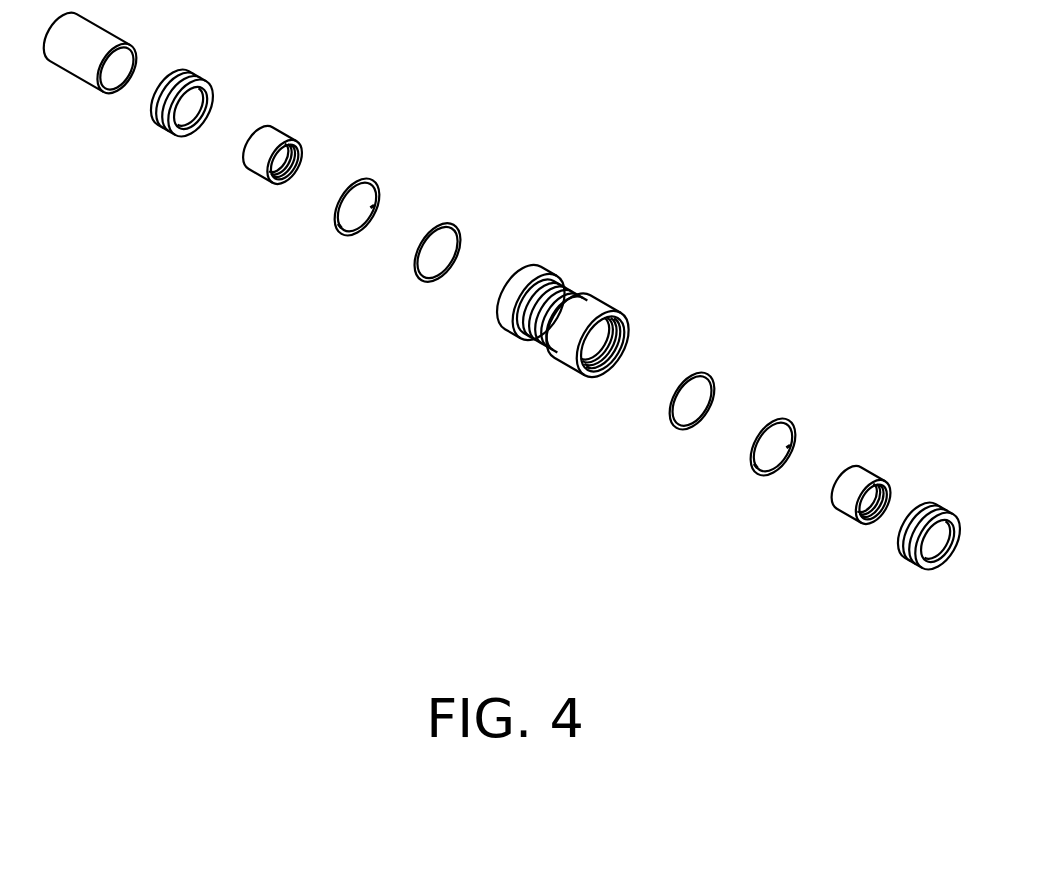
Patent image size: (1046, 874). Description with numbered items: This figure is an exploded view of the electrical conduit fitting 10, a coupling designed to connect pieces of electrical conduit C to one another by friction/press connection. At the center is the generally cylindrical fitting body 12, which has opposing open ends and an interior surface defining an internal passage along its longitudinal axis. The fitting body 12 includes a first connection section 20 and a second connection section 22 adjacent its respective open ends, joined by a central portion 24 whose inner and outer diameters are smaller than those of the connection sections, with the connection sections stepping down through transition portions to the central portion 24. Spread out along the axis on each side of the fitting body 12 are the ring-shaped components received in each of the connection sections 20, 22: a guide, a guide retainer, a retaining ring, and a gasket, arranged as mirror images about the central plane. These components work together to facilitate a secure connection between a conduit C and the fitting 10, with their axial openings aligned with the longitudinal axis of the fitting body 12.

The electrical conduit fitting 10 is at (783, 108).
The fitting body 12 is at (562, 316).
The first connection section 20 is at (533, 270).
The second connection section 22 is at (608, 372).
The central portion 24 is at (573, 300).
The electrical conduit C is at (72, 63).